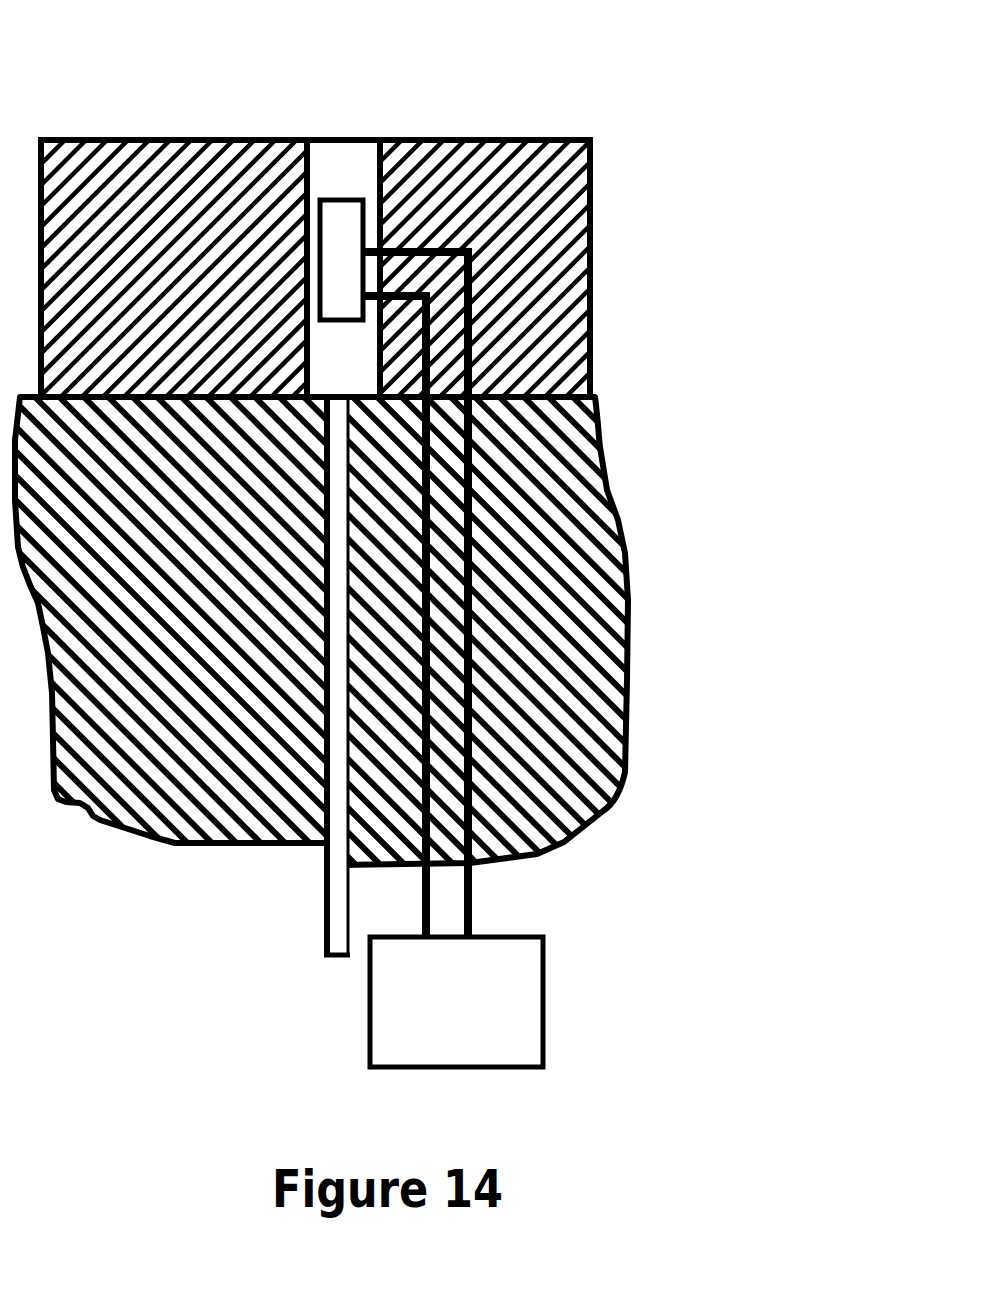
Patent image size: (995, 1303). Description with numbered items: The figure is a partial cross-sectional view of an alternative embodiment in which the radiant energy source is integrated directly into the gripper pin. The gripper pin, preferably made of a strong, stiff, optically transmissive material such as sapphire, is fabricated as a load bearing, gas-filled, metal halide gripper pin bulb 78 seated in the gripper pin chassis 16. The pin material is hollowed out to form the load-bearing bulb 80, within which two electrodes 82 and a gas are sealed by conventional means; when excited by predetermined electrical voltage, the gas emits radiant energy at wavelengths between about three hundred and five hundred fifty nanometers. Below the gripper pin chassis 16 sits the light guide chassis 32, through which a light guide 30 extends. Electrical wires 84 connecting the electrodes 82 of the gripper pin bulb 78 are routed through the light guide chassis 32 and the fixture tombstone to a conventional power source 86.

The gripper pin chassis 16 is at (590, 348).
The light guide 30 is at (322, 930).
The light guide chassis 32 is at (627, 747).
The gripper pin bulb 78 is at (412, 225).
The load-bearing bulb 80 is at (328, 152).
The electrodes 82 is at (348, 218).
The electrical wires 84 is at (474, 917).
The power source 86 is at (475, 1023).